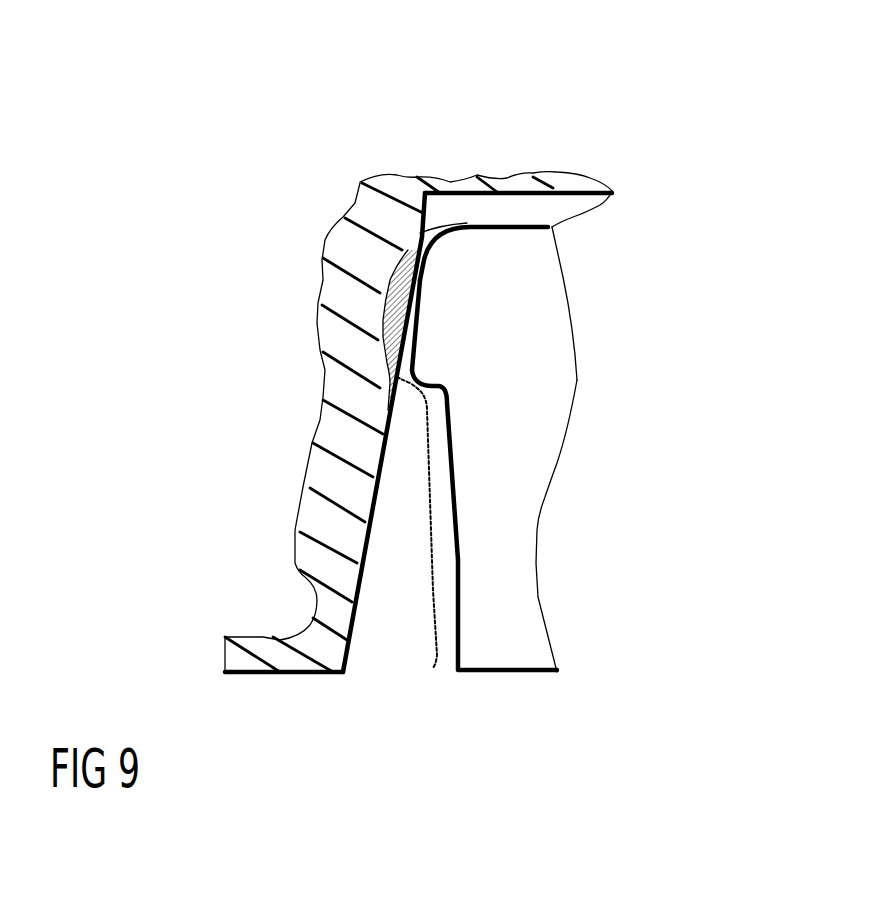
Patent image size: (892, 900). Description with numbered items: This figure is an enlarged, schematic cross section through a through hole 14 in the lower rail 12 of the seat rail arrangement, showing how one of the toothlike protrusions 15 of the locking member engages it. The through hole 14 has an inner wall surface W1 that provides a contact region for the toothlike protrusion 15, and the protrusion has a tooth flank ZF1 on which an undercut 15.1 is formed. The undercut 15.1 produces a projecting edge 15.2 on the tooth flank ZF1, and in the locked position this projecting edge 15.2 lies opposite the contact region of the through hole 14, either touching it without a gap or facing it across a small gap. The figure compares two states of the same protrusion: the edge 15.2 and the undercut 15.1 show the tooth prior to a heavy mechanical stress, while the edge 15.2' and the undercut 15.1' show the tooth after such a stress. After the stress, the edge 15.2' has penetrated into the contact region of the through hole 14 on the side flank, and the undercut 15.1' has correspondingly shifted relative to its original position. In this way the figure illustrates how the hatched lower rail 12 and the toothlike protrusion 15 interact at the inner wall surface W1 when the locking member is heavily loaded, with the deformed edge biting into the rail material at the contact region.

The lower rail 12 is at (360, 183).
The through hole 14 is at (380, 637).
The toothlike protrusion 15 is at (510, 510).
The undercut 15.1 is at (484, 578).
The undercut after stress 15.1' is at (402, 582).
The projecting edge 15.2 is at (516, 226).
The projecting edge after stress 15.2' is at (425, 224).
The inner wall surface W1 is at (377, 498).
The tooth flank ZF1 is at (460, 543).